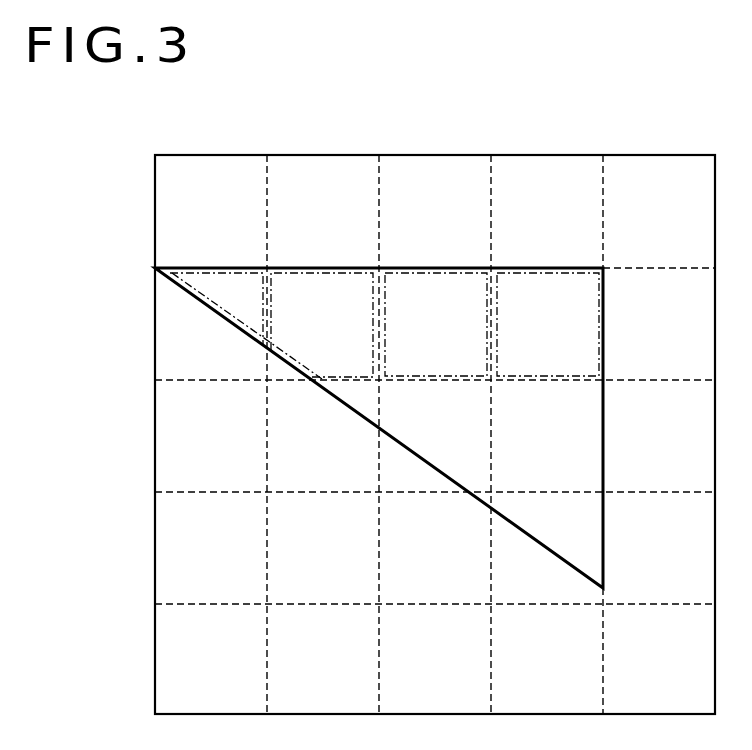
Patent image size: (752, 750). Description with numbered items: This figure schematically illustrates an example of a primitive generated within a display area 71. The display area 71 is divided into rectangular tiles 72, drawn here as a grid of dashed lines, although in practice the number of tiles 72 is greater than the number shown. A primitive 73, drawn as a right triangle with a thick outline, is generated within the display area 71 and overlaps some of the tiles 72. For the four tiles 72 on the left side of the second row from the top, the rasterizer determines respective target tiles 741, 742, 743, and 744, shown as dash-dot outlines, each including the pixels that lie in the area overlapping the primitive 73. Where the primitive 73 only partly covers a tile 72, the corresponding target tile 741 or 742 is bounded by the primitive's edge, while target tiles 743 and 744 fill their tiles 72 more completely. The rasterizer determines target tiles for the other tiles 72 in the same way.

The display area 71 is at (208, 154).
The rectangular tiles 72 is at (326, 166).
The primitive 73 is at (228, 320).
The target tile 741 is at (220, 280).
The target tile 742 is at (312, 280).
The target tile 743 is at (435, 283).
The target tile 744 is at (548, 283).